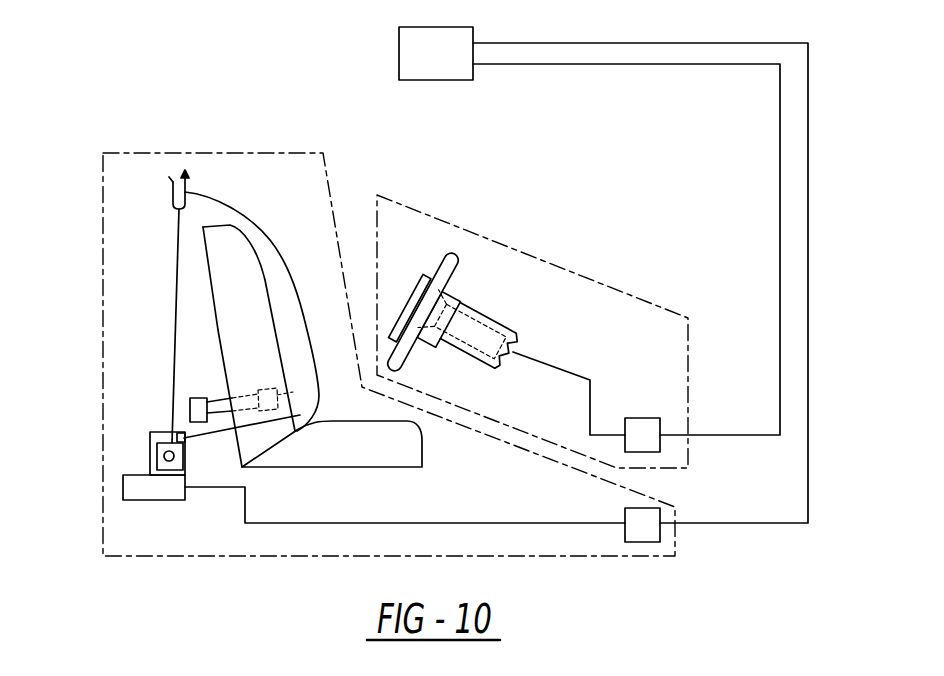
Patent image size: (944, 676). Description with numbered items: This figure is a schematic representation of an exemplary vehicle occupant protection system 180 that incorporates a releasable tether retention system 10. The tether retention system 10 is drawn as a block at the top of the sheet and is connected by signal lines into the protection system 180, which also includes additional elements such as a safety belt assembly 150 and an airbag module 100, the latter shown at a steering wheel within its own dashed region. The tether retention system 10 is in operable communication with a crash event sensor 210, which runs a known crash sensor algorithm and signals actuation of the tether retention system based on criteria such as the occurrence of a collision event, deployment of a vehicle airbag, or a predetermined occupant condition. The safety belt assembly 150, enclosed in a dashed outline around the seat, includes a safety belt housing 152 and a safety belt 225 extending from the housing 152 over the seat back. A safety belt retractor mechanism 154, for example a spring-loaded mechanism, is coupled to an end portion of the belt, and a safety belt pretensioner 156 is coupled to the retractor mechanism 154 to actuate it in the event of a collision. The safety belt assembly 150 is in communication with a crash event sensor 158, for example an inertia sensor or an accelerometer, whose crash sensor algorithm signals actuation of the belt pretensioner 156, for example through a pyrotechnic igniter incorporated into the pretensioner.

The tether retention system 10 is at (427, 27).
The airbag module 100 is at (443, 297).
The safety belt assembly 150 is at (228, 147).
The safety belt housing 152 is at (178, 460).
The safety belt retractor mechanism 154 is at (151, 432).
The safety belt pretensioner 156 is at (155, 490).
The crash event sensor 158 is at (643, 530).
The vehicle occupant protection system 180 is at (640, 153).
The crash event sensor 210 is at (646, 431).
The safety belt 225 is at (262, 232).